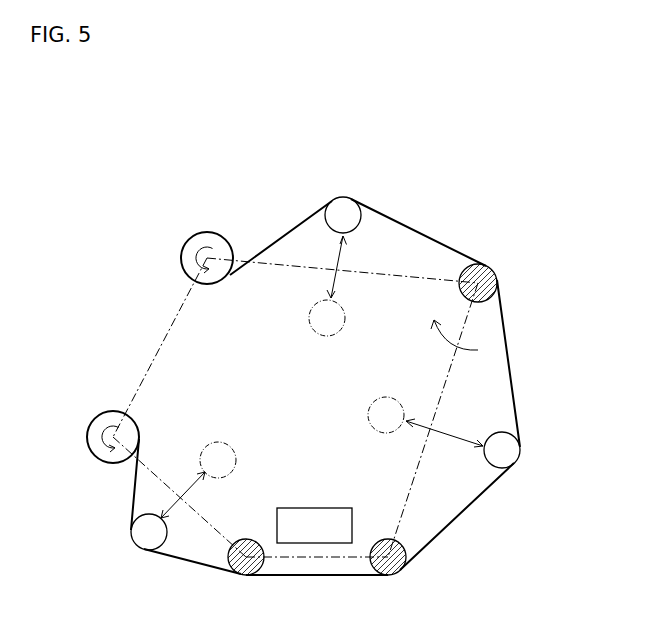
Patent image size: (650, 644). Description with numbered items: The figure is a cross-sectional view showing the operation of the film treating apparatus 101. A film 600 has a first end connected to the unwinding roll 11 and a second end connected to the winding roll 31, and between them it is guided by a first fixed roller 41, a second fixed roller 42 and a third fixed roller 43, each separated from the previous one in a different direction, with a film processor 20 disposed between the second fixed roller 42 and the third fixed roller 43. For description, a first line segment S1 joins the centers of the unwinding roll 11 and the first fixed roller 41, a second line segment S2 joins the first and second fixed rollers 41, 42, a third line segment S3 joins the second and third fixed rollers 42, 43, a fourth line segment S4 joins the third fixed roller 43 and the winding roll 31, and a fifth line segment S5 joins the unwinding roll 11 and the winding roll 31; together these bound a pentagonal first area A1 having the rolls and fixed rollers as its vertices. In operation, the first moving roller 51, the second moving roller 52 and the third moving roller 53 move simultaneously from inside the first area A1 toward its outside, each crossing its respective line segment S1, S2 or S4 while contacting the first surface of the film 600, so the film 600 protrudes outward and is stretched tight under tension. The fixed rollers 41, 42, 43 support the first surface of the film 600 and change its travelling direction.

The film treating apparatus 101 is at (444, 104).
The film 600 is at (390, 216).
The unwinding roll 11 is at (224, 238).
The winding roll 31 is at (96, 452).
The first moving roller 51 is at (344, 204).
The second moving roller 52 is at (512, 452).
The third moving roller 53 is at (140, 530).
The first fixed roller 41 is at (488, 274).
The second fixed roller 42 is at (400, 562).
The third fixed roller 43 is at (238, 566).
The film processor 20 is at (313, 520).
The first line segment S1 is at (390, 273).
The second line segment S2 is at (418, 478).
The third line segment S3 is at (315, 559).
The fourth line segment S4 is at (150, 468).
The fifth line segment S5 is at (158, 346).
The first area A1 is at (466, 342).